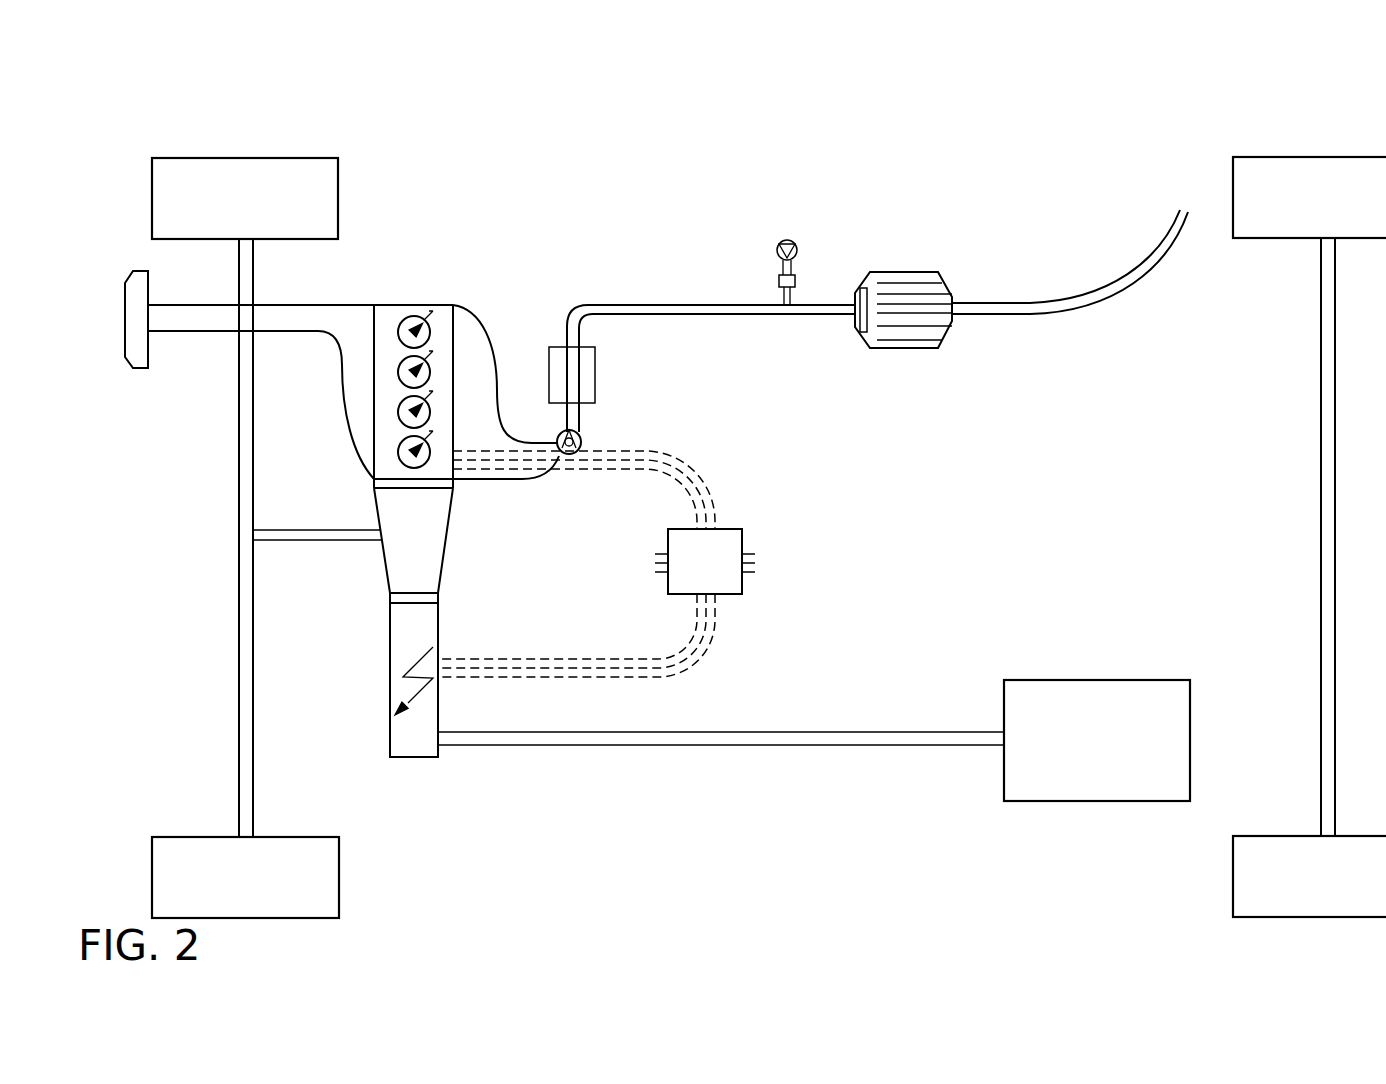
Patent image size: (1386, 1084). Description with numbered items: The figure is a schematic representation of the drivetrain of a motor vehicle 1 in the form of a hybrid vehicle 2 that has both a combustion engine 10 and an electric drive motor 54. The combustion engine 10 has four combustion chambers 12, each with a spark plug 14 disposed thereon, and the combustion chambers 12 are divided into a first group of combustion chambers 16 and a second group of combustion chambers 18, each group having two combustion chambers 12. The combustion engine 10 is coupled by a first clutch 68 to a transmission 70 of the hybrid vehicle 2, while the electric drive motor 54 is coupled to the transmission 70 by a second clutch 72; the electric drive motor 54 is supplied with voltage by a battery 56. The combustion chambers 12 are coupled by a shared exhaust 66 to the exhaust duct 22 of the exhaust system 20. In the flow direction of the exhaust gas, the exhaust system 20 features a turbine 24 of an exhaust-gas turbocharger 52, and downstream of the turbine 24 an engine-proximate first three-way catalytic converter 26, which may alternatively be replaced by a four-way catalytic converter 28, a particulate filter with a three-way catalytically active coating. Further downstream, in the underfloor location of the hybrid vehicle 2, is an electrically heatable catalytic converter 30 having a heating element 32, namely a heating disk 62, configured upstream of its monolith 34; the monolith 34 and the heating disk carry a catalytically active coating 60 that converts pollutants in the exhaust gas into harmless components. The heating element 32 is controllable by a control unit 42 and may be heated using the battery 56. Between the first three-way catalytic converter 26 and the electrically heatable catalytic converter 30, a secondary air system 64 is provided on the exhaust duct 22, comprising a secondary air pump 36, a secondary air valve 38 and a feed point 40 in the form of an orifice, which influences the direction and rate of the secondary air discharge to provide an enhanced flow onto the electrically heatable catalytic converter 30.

The motor vehicle 1 is at (269, 105).
The hybrid vehicle 2 is at (352, 577).
The combustion engine 10 is at (445, 313).
The combustion chamber 12 is at (399, 324).
The spark plug 14 is at (430, 355).
The first group of combustion chambers 16 is at (406, 339).
The second group of combustion chambers 18 is at (406, 415).
The exhaust system 20 is at (995, 193).
The exhaust duct 22 is at (591, 310).
The turbine 24 is at (630, 437).
The exhaust-gas turbocharger 52 is at (583, 437).
The three-way catalytic converter 26 is at (628, 375).
The four-way catalytic converter 28 is at (587, 373).
The electrically heatable catalytic converter 30 is at (866, 277).
The heating element 32 is at (843, 341).
The heating disk 62 is at (864, 320).
The monolith 34 is at (913, 320).
The secondary air pump 36 is at (778, 243).
The secondary air valve 38 is at (772, 280).
The feed point 40 is at (789, 303).
The control unit 42 is at (730, 585).
The electric drive motor 54 is at (425, 751).
The battery 56 is at (1043, 681).
The catalytically active coating 60 is at (918, 272).
The secondary air system 64 is at (787, 206).
The exhaust 66 is at (478, 405).
The first clutch 68 is at (442, 482).
The transmission 70 is at (435, 537).
The second clutch 72 is at (428, 598).